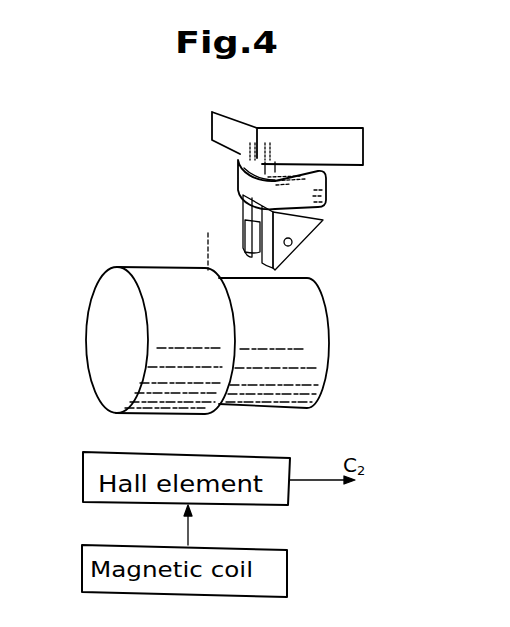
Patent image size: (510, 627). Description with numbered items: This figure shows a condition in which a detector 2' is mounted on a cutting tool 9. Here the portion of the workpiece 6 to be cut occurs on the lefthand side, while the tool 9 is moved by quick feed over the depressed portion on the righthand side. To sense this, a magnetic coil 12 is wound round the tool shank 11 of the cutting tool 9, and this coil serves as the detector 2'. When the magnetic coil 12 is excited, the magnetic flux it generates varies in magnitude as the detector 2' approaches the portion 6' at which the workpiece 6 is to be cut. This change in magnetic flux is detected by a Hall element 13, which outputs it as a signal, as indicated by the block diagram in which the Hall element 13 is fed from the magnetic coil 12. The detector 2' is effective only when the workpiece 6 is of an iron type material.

The detector 2' is at (283, 171).
The workpiece 6 is at (184, 340).
The portion of the workpiece to be cut 6' is at (190, 244).
The cutting tool 9 is at (298, 243).
The tool shank 11 is at (312, 218).
The magnetic coil 12 is at (323, 188).
The Hall element 13 is at (253, 227).